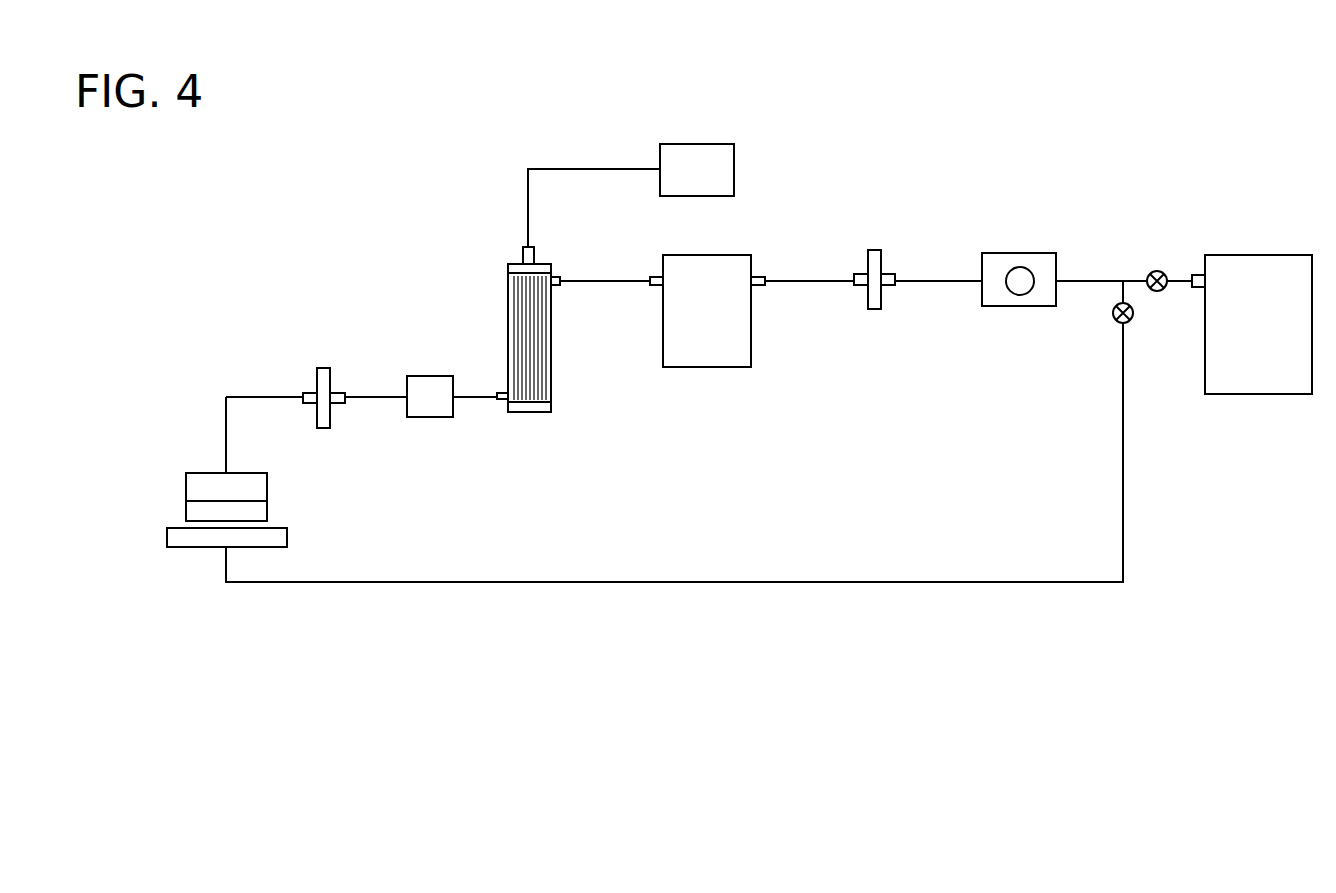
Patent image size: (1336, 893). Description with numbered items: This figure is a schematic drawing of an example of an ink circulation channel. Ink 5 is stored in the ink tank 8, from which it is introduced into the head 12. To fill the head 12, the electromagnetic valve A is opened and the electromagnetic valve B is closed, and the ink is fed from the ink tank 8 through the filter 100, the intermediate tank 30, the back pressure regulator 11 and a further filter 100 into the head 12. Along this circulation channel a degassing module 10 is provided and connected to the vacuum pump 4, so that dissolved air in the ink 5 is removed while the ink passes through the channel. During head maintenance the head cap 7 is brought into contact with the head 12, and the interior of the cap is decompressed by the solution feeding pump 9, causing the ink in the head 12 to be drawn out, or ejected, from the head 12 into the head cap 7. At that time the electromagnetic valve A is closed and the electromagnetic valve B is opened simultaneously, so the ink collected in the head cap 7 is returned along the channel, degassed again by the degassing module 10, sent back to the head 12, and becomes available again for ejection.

The vacuum pump 4 is at (734, 170).
The degassing module 10 is at (530, 412).
The back pressure regulator 11 is at (430, 417).
The head 12 is at (186, 493).
The head cap 7 is at (167, 538).
The filter 100 is at (324, 428).
The intermediate tank 30 is at (706, 367).
The solution feeding pump 9 is at (1020, 306).
The electromagnetic valve A is at (1157, 271).
The electromagnetic valve B is at (1134, 313).
The ink 5 is at (1214, 371).
The ink tank 8 is at (1260, 394).